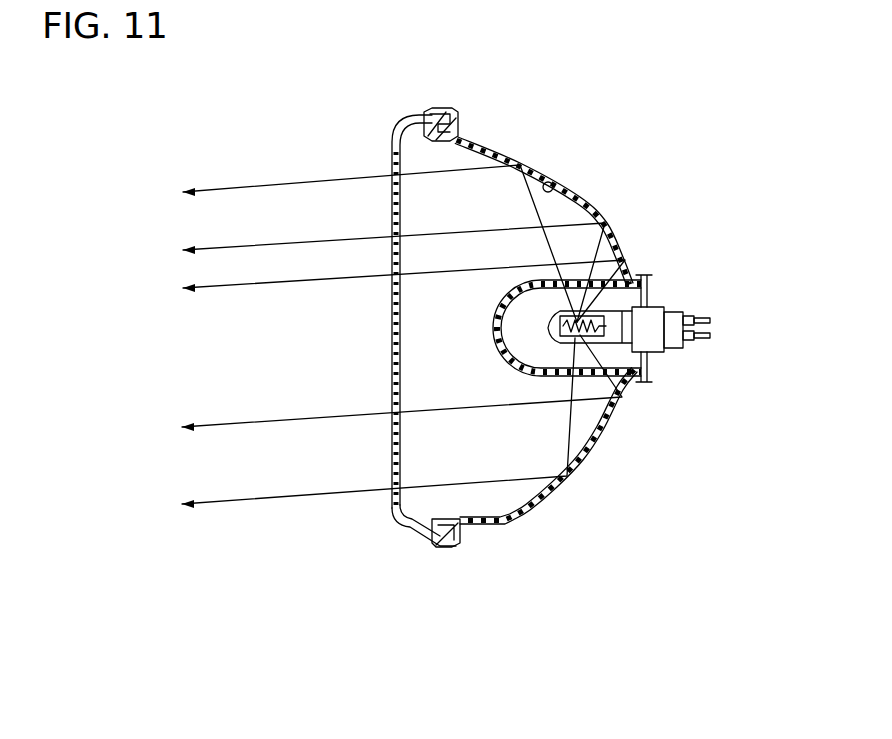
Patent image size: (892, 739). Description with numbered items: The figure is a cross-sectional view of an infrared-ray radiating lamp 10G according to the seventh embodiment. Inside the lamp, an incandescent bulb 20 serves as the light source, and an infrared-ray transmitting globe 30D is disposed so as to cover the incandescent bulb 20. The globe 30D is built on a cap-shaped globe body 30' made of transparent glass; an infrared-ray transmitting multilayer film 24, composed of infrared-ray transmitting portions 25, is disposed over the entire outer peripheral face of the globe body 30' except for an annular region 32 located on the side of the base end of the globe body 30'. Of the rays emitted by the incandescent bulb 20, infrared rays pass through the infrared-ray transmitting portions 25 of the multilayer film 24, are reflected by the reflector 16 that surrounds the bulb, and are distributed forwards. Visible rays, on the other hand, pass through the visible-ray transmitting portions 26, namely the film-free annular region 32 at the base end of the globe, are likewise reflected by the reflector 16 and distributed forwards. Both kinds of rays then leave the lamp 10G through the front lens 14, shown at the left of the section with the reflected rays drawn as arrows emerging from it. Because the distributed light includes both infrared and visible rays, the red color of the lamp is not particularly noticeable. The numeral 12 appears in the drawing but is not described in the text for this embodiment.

The infrared-ray radiating lamp 10G is at (382, 321).
The reflector 12 is at (597, 204).
The front lens 14 is at (392, 156).
The reflector 16 is at (548, 182).
The incandescent bulb 20 is at (640, 387).
The infrared-ray transmitting multilayer film 24 is at (505, 312).
The infrared-ray transmitting portions 25 is at (605, 273).
The visible-ray transmitting portions 26 is at (706, 282).
The infrared-ray transmitting globe 30D is at (486, 350).
The globe body 30' is at (469, 356).
The annular region 32 is at (623, 260).